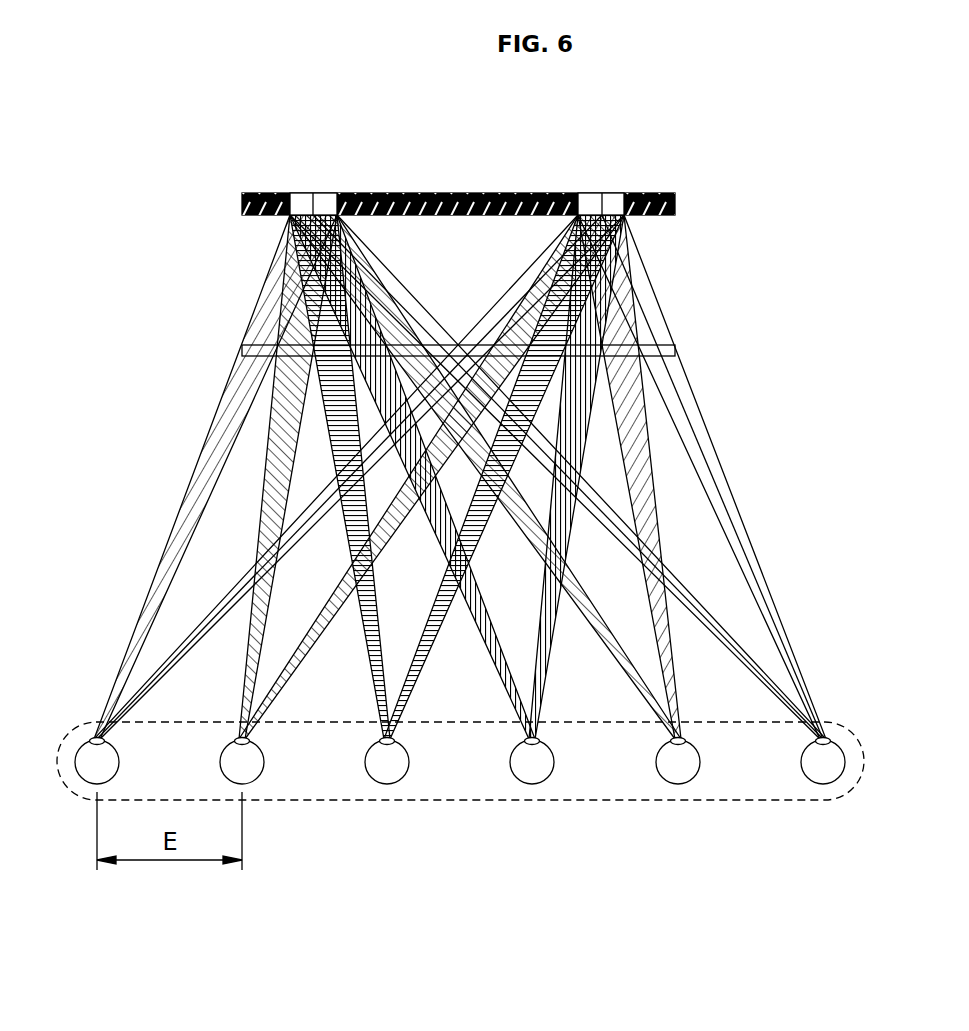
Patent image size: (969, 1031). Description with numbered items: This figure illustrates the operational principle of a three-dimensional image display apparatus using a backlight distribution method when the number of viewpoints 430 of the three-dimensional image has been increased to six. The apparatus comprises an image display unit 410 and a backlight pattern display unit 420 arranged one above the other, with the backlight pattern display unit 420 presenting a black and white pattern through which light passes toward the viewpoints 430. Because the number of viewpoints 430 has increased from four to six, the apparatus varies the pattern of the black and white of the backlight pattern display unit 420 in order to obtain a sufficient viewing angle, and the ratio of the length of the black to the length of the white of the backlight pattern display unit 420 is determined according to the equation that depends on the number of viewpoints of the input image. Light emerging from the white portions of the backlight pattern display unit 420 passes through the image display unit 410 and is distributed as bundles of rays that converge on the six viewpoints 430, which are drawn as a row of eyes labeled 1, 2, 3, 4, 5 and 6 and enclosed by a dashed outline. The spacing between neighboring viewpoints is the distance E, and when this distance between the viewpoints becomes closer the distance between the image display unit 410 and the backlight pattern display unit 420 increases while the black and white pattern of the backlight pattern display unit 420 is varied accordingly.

The image display unit 410 is at (675, 350).
The backlight pattern display unit 420 is at (675, 203).
The viewpoints 430 is at (467, 675).
The viewpoint 1 is at (97, 761).
The viewpoint 2 is at (242, 761).
The viewpoint 3 is at (387, 761).
The viewpoint 4 is at (532, 761).
The viewpoint 5 is at (678, 761).
The viewpoint 6 is at (823, 761).